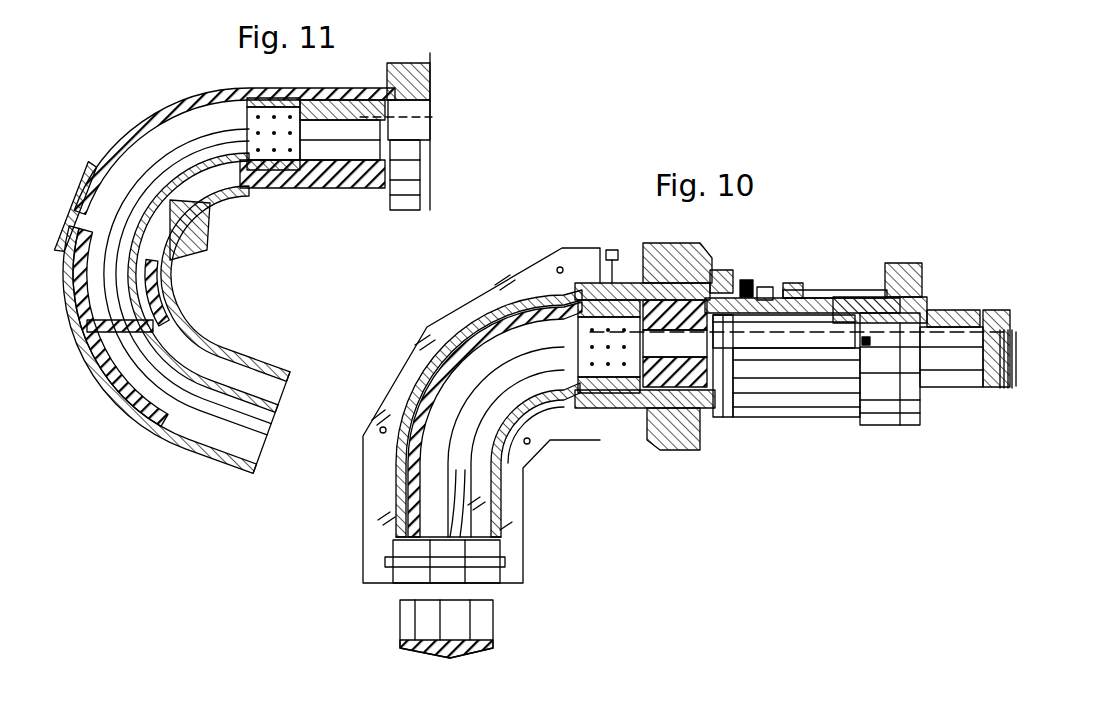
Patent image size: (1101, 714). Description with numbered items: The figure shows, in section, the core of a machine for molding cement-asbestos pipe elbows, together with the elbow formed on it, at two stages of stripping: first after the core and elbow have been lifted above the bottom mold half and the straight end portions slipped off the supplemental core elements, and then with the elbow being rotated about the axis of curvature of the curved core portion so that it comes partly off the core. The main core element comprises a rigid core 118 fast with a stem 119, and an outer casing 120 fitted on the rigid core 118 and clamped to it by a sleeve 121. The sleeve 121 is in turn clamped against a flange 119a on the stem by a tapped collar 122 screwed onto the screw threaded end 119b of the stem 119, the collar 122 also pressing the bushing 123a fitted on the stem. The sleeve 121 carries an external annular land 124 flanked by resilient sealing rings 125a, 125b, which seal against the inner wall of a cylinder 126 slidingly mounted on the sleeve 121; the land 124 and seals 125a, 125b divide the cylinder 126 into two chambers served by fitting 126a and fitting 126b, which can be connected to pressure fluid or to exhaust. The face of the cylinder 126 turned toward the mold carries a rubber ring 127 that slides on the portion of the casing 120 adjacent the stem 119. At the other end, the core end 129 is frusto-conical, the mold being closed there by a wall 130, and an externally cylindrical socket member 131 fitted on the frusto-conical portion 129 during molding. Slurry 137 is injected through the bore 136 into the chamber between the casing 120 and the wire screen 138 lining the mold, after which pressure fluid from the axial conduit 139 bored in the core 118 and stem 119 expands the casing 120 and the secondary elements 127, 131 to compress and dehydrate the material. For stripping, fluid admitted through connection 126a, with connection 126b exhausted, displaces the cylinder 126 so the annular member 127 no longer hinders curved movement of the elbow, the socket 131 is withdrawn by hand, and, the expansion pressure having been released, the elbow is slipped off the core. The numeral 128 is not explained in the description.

In FIG. 11, the rigid core 118 is at (197, 167).
In FIG. 10, the rigid core 118 is at (490, 398).
In FIG. 11, the stem 119 is at (420, 127).
In FIG. 10, the stem 119 is at (817, 350).
In FIG. 10, the flange 119a is at (867, 340).
In FIG. 10, the screw threaded end 119b is at (1017, 338).
In FIG. 11, the outer casing 120 is at (130, 150).
In FIG. 10, the outer casing 120 is at (548, 290).
In FIG. 11, the sleeve 121 is at (427, 93).
In FIG. 10, the sleeve 121 is at (777, 340).
In FIG. 10, the tapped collar 122 is at (1007, 310).
In FIG. 10, the bushing 123a is at (947, 317).
In FIG. 10, the external annular land 124 is at (790, 298).
In FIG. 10, the sealing ring 125a is at (803, 290).
In FIG. 10, the sealing ring 125b is at (790, 340).
In FIG. 11, the cylinder 126 is at (420, 78).
In FIG. 10, the cylinder 126 is at (803, 393).
In FIG. 10, the fitting 126a is at (763, 287).
In FIG. 10, the fitting 126b is at (882, 273).
In FIG. 11, the rubber ring 127 is at (338, 190).
In FIG. 10, the rubber ring 127 is at (685, 400).
In FIG. 10, the upper fitting 128 is at (657, 270).
In FIG. 10, the core end 129 is at (467, 507).
In FIG. 10, the wall 130 is at (490, 563).
In FIG. 10, the socket member 131 is at (402, 640).
In FIG. 10, the bore 136 is at (610, 250).
In FIG. 11, the slurry 137 is at (204, 342).
In FIG. 10, the slurry 137 is at (490, 310).
In FIG. 11, the wire screen 138 is at (160, 350).
In FIG. 10, the wire screen 138 is at (460, 337).
In FIG. 11, the axial conduit 139 is at (353, 127).
In FIG. 10, the axial conduit 139 is at (697, 353).